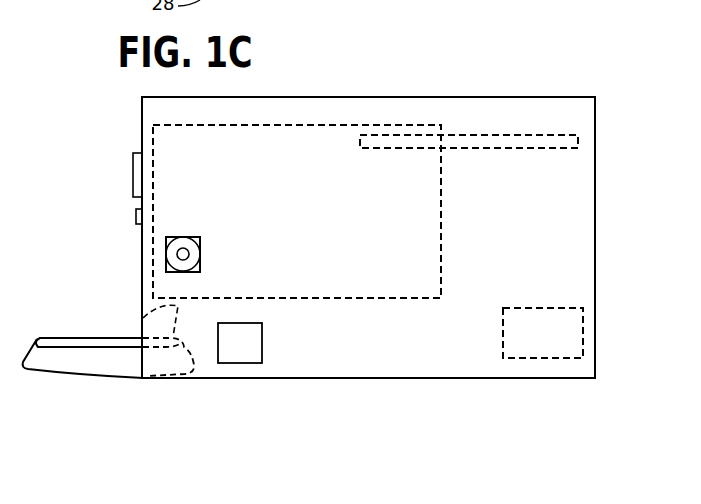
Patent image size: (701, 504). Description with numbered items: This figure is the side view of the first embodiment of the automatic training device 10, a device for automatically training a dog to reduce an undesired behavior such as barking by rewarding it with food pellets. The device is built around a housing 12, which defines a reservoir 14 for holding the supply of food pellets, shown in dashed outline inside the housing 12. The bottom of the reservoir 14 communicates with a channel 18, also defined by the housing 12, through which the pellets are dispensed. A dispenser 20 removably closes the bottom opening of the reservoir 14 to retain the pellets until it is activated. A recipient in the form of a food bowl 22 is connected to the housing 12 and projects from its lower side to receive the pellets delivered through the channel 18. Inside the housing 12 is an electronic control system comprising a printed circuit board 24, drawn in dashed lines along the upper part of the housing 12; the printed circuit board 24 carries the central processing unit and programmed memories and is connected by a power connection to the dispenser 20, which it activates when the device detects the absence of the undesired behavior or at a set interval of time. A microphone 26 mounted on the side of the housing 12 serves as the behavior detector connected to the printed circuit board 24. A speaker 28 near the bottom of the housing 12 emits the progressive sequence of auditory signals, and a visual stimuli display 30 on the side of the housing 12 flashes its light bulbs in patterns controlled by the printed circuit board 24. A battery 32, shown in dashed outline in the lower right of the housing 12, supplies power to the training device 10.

The automatic training device 10 is at (507, 82).
The housing 12 is at (577, 97).
The reservoir 14 is at (176, 123).
The channel 18 is at (143, 318).
The dispenser 20 is at (165, 258).
The food bowl 22 is at (57, 356).
The printed circuit board 24 is at (578, 143).
The microphone 26 is at (134, 217).
The speaker 28 is at (237, 363).
The visual stimuli display 30 is at (130, 166).
The battery 32 is at (592, 329).